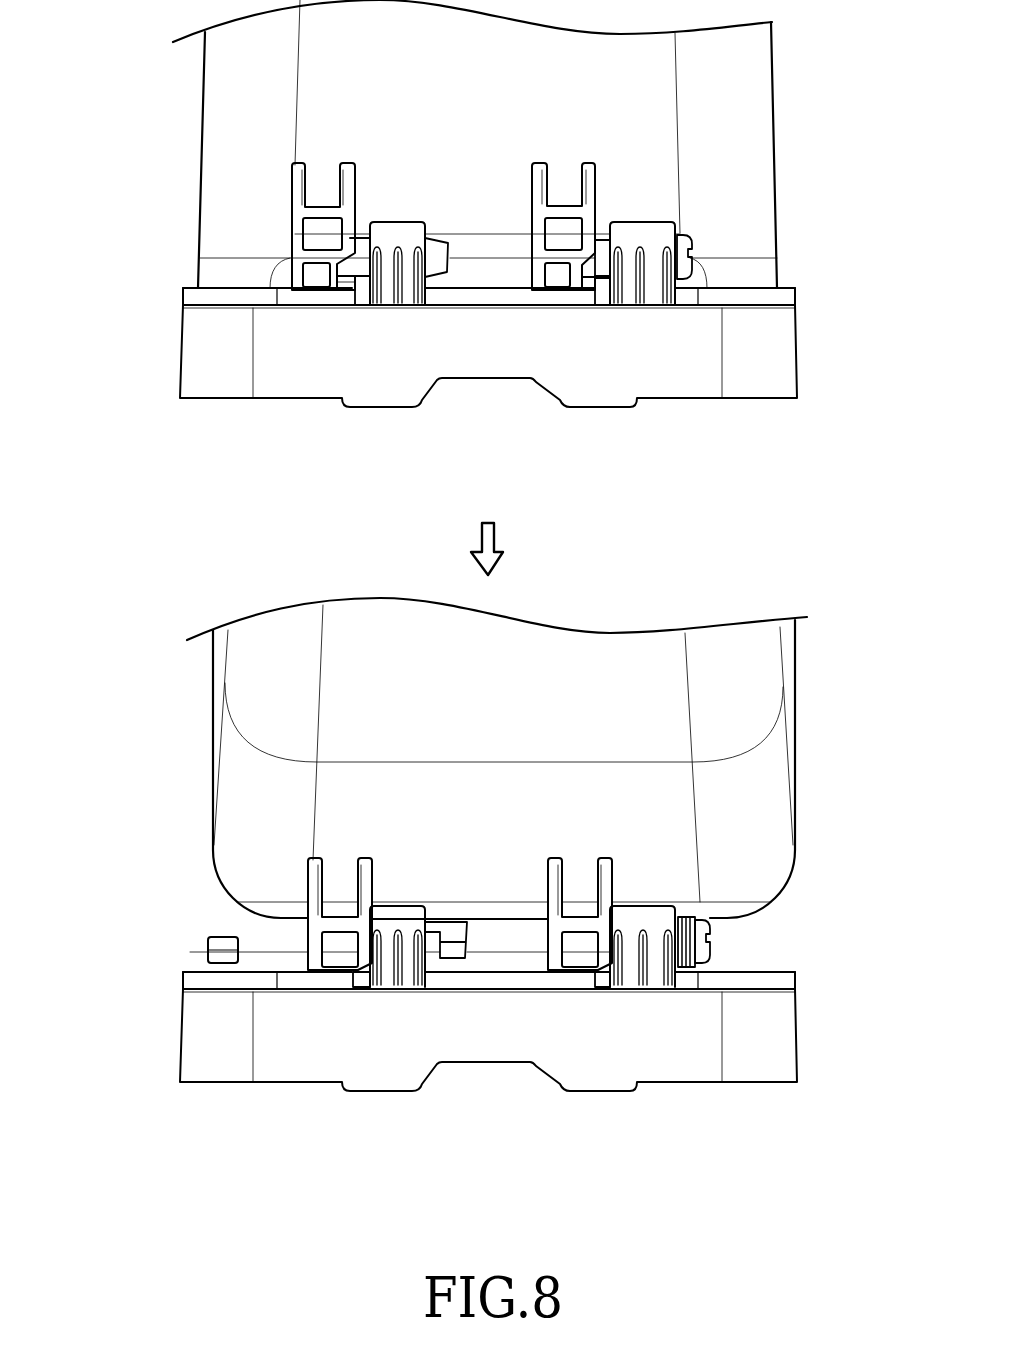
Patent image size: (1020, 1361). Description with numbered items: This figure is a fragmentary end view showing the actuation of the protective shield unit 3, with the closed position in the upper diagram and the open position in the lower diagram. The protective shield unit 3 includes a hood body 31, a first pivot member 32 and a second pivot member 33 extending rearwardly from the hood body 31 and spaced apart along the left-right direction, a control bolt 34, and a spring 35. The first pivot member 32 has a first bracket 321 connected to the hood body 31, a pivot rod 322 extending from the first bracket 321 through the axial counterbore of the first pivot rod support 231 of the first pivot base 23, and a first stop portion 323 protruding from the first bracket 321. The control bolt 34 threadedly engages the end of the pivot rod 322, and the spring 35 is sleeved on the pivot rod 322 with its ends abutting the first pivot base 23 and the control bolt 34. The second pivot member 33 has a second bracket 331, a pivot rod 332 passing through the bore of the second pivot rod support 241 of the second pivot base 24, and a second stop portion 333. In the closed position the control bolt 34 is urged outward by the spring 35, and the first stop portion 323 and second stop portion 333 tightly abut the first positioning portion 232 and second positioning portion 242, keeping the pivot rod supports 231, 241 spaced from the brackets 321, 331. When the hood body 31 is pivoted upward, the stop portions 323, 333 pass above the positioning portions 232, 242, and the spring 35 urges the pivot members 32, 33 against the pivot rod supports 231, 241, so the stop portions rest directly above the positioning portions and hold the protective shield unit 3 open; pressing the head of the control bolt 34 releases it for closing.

The protective shield unit 3 is at (170, 133).
The hood body 31 is at (763, 117).
The first pivot member 32 is at (570, 146).
The first bracket 321 is at (538, 193).
The pivot rod 322 is at (605, 243).
The first stop portion 323 is at (590, 278).
The second pivot member 33 is at (355, 135).
The second bracket 331 is at (297, 212).
The pivot rod 332 is at (437, 248).
The second stop portion 333 is at (345, 282).
The first pivot base 23 is at (653, 332).
The first pivot rod support 231 is at (653, 230).
The first positioning portion 232 is at (604, 297).
The second pivot base 24 is at (402, 340).
The second pivot rod support 241 is at (400, 230).
The second positioning portion 242 is at (363, 296).
The control bolt 34 is at (690, 240).
The spring 35 is at (688, 922).